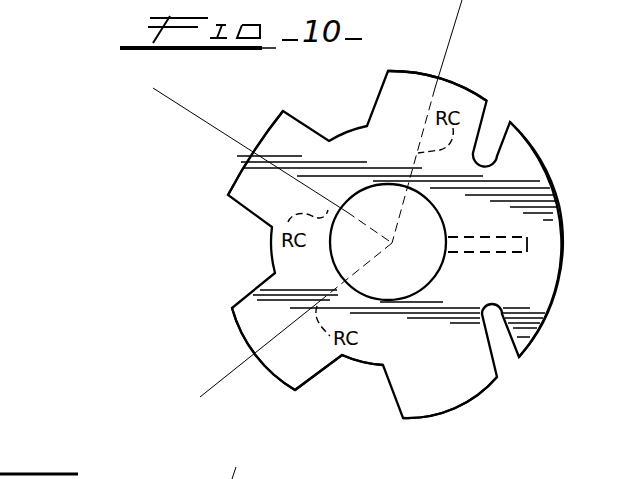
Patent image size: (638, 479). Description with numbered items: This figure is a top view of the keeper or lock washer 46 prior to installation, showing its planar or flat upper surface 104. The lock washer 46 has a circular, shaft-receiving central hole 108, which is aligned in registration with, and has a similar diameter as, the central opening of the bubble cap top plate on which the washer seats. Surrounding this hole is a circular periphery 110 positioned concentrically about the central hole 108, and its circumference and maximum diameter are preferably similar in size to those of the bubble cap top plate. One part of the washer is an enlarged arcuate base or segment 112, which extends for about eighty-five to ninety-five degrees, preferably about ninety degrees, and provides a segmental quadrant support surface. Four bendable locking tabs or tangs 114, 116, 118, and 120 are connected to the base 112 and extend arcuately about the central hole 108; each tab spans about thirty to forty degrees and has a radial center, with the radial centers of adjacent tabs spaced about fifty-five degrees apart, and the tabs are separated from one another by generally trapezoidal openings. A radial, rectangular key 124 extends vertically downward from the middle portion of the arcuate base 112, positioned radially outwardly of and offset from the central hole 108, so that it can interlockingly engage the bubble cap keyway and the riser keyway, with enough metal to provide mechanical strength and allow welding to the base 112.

The keeper or lock washer 46 is at (220, 210).
The upper surface 104 is at (520, 182).
The central hole 108 is at (446, 226).
The circular periphery 110 is at (541, 321).
The arcuate base 112 is at (562, 243).
The locking tab 114 is at (430, 74).
The locking tab 116 is at (255, 141).
The locking tab 118 is at (256, 355).
The locking tab 120 is at (447, 412).
The key 124 is at (527, 252).